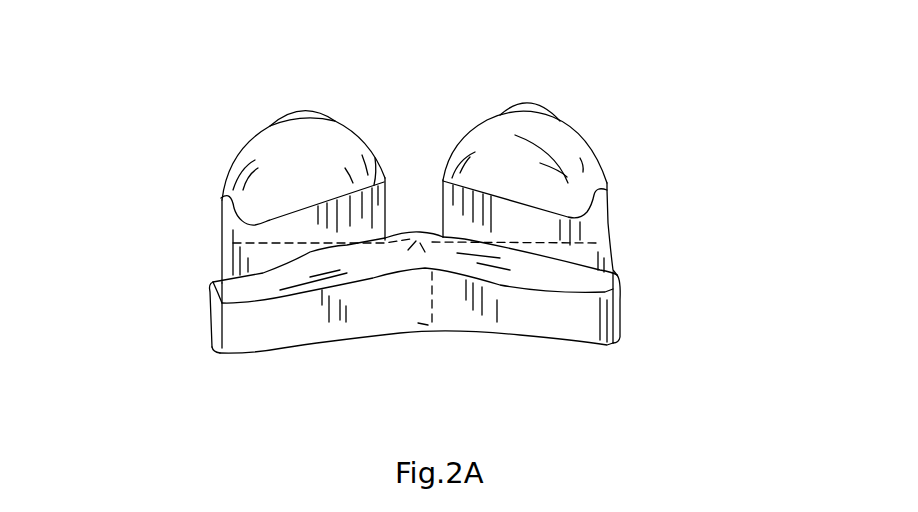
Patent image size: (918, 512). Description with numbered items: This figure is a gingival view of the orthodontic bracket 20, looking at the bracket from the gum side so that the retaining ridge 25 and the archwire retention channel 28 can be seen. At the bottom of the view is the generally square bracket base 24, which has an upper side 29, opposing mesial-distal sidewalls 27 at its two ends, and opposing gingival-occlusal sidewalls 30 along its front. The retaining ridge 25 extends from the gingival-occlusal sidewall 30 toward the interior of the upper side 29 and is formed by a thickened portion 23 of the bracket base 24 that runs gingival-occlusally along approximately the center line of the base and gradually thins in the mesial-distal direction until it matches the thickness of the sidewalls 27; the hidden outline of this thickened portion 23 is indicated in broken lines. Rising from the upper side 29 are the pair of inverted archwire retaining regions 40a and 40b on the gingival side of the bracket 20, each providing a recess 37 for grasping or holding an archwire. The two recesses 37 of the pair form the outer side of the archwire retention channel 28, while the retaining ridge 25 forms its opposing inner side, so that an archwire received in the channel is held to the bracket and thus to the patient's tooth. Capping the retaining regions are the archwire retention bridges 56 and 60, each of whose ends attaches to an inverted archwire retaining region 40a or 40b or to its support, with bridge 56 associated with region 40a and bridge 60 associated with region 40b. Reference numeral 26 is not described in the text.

The bracket 20 is at (633, 147).
The thickened portion 23 is at (433, 291).
The bracket base 24 is at (215, 351).
The retaining ridge 25 is at (418, 228).
The bottom edge 26 is at (288, 346).
The mesial-distal sidewall 27 is at (210, 323).
The archwire retention channel 28 is at (410, 256).
The upper side 29 is at (598, 286).
The gingival-occlusal sidewall 30 is at (556, 318).
The recess 37 is at (224, 201).
The inverted archwire retaining region 40a is at (522, 143).
The inverted archwire retaining region 40b is at (278, 162).
The archwire retention bridge 56 is at (523, 103).
The archwire retention bridge 60 is at (302, 108).